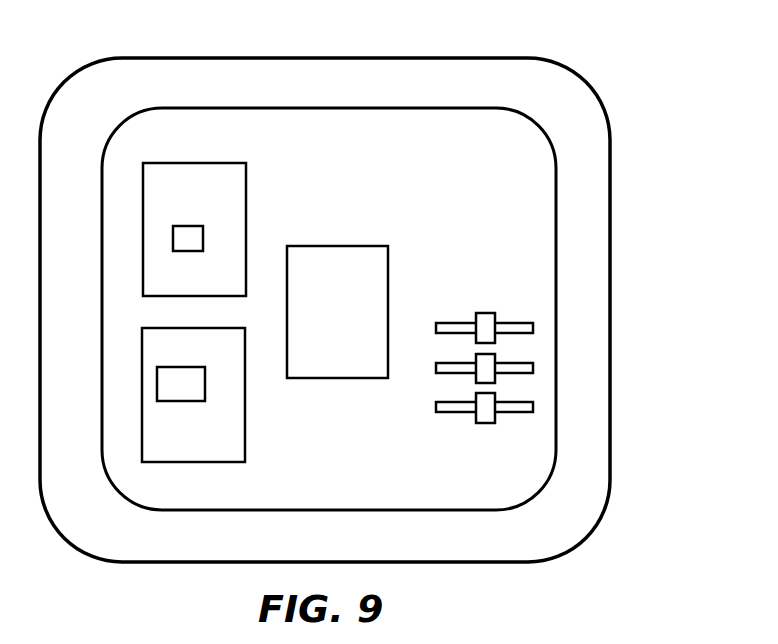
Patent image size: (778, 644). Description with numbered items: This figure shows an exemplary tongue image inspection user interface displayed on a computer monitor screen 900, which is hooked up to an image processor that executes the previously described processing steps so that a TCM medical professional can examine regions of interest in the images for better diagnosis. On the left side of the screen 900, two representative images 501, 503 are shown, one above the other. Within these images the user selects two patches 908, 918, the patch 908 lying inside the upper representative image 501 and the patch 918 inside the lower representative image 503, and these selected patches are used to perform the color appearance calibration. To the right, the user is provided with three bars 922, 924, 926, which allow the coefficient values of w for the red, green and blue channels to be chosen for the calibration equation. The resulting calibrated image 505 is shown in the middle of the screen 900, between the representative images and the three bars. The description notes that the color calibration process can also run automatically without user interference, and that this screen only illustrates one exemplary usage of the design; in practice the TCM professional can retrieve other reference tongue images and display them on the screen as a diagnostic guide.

The computer monitor screen 900 is at (367, 58).
The representative image 501 is at (191, 163).
The patch 908 is at (190, 226).
The representative image 503 is at (186, 462).
The patch 918 is at (205, 387).
The calibrated image 505 is at (388, 264).
The bar 922 is at (533, 326).
The bar 924 is at (533, 366).
The bar 926 is at (533, 405).